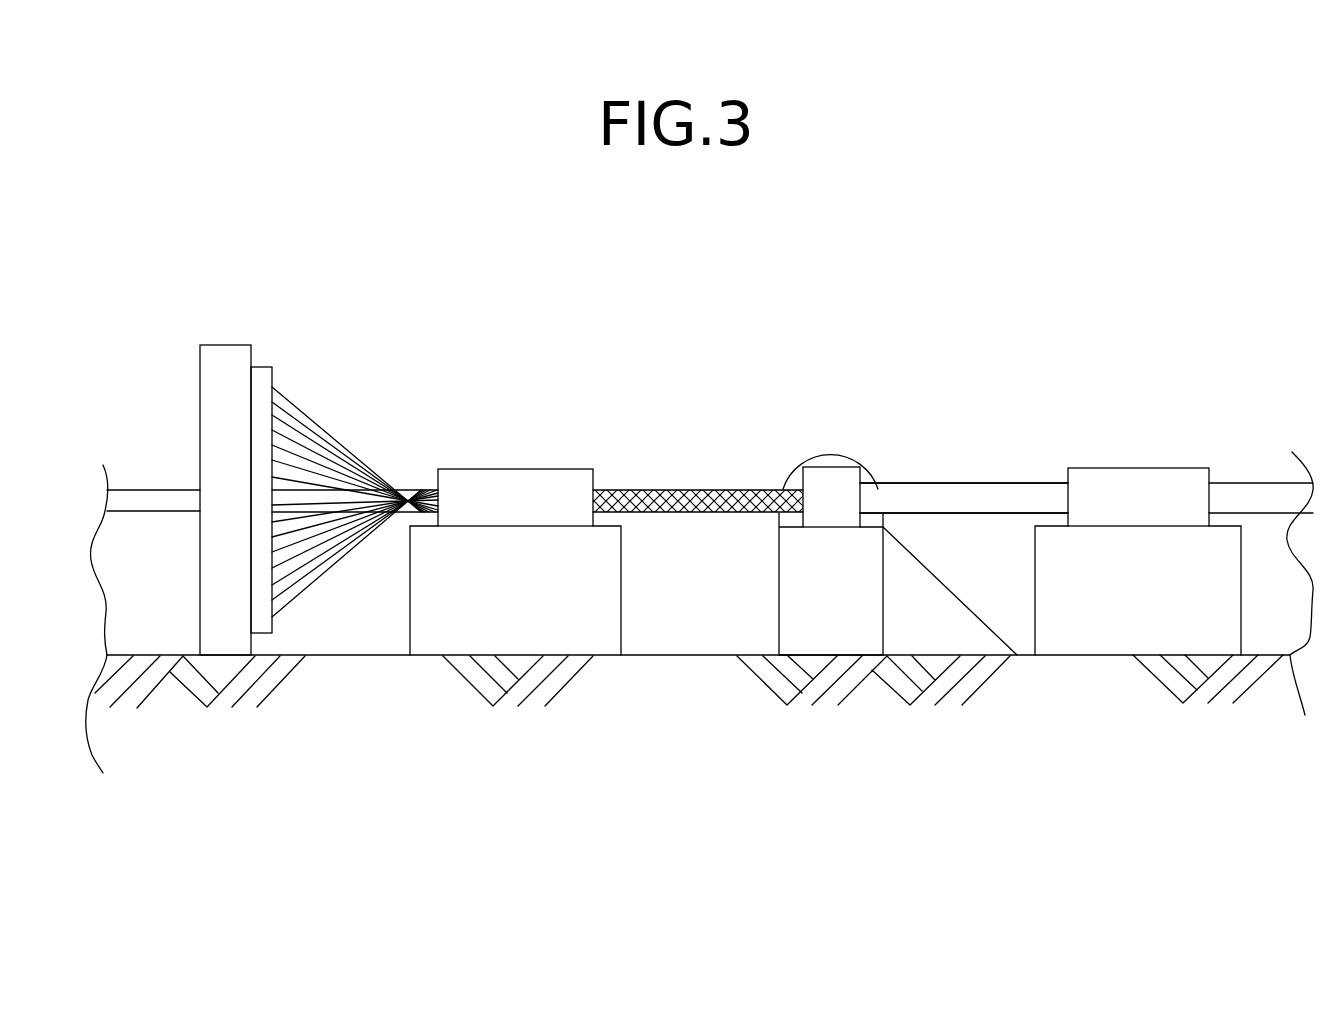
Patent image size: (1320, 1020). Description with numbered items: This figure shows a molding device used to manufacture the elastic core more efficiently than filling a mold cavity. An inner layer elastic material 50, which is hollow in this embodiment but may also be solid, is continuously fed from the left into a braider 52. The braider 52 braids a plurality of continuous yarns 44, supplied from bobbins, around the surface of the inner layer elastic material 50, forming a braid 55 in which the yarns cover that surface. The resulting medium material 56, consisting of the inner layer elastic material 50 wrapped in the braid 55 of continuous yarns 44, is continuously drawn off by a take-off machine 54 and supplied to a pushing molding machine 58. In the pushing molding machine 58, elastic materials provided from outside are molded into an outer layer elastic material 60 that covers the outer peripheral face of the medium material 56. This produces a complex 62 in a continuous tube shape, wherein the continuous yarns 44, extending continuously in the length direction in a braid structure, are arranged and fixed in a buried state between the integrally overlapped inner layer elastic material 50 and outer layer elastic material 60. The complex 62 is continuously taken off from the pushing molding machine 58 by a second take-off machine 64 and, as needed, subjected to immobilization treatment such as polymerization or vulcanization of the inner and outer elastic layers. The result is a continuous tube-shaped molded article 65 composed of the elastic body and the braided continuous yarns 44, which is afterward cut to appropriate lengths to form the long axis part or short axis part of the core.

The continuous yarns 44 is at (326, 413).
The inner layer elastic material 50 is at (170, 484).
The braider 52 is at (222, 342).
The take-off machine 54 is at (514, 465).
The braid 55 is at (648, 488).
The medium material 56 is at (711, 484).
The pushing molding machine 58 is at (825, 449).
The outer layer elastic material 60 is at (907, 497).
The complex 62 is at (970, 480).
The take-off machine 64 is at (1137, 465).
The tube-shaped molded article 65 is at (1240, 480).